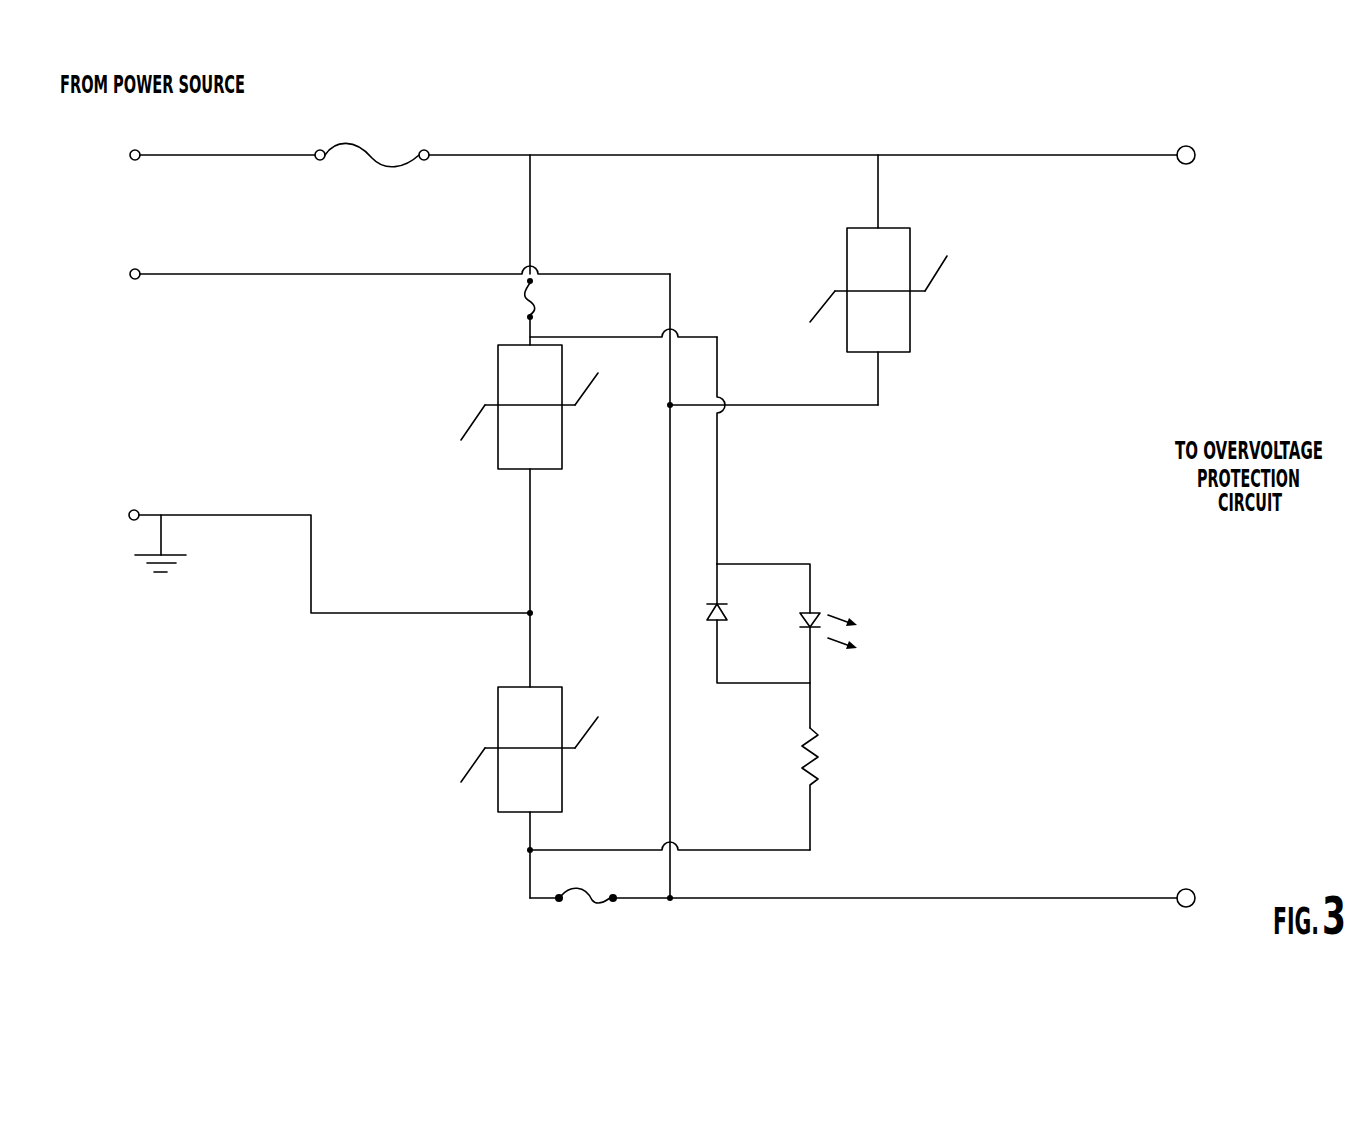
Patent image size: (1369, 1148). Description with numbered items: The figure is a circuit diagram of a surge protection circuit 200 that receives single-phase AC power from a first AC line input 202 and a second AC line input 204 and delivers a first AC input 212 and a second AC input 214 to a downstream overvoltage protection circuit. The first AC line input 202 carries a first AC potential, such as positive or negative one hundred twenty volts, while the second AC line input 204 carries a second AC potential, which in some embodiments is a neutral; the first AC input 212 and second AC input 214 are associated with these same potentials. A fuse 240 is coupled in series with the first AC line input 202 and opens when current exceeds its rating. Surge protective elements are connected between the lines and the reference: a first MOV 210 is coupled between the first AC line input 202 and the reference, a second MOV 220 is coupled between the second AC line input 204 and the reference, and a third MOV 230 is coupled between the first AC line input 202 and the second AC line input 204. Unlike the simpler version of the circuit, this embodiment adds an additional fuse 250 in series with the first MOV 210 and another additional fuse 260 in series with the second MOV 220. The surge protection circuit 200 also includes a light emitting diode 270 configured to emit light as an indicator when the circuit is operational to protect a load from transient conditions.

The surge protection circuit 200 is at (1207, 89).
The first AC line input 202 is at (222, 158).
The second AC line input 204 is at (222, 277).
The first MOV 210 is at (497, 468).
The first AC input 212 is at (1150, 160).
The second AC input 214 is at (1121, 896).
The second MOV 220 is at (497, 728).
The third MOV 230 is at (893, 313).
The fuse 240 is at (365, 150).
The additional fuse 250 is at (523, 294).
The additional fuse 260 is at (592, 903).
The light emitting diode (LED) 270 is at (818, 612).